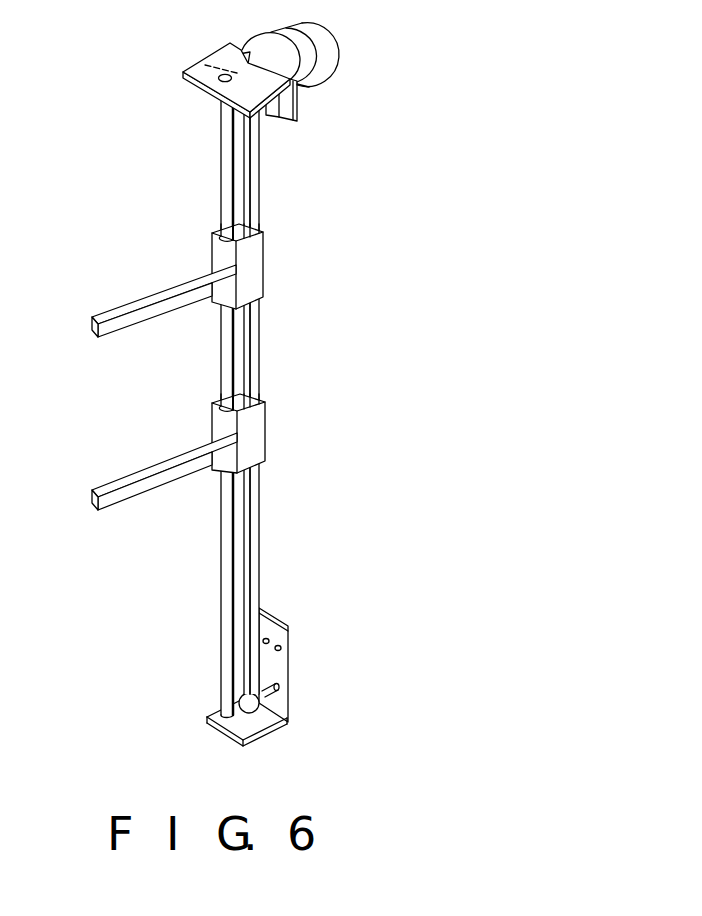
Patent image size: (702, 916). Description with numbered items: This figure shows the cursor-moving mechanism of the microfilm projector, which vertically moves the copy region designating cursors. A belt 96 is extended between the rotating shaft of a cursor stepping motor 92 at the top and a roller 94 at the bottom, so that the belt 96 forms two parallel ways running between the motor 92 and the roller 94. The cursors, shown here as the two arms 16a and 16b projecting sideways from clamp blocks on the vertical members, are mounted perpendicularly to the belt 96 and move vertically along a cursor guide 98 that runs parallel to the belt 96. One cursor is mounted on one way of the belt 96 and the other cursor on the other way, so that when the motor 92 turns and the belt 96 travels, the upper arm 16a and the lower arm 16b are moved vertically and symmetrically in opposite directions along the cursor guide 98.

The cursor stepping motor 92 is at (308, 34).
The cursor guide 98 is at (222, 159).
The belt 96 is at (259, 342).
The upper support arm 16a is at (128, 304).
The lower support arm 16b is at (122, 496).
The roller 94 is at (252, 709).